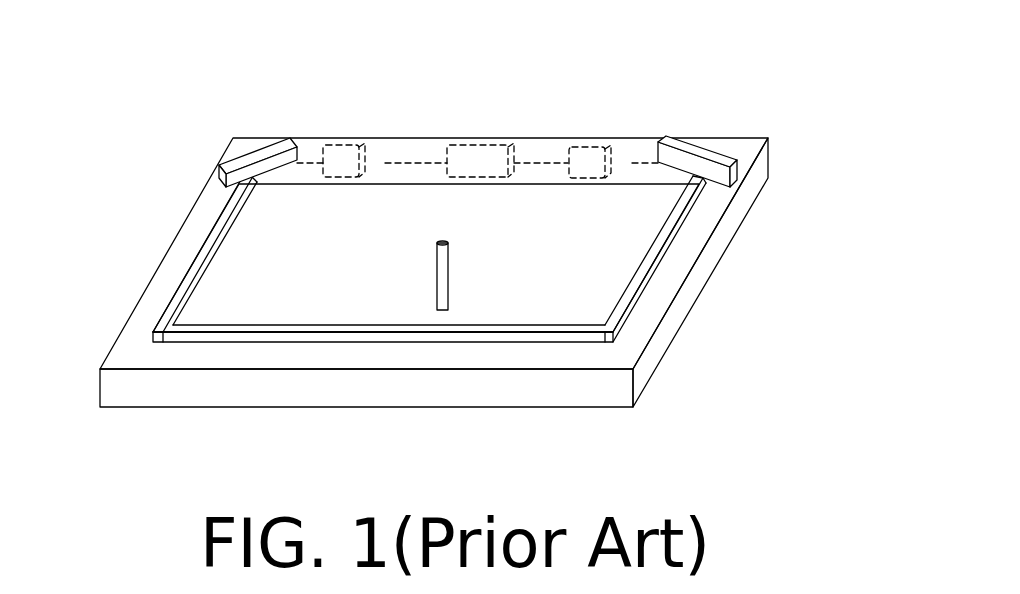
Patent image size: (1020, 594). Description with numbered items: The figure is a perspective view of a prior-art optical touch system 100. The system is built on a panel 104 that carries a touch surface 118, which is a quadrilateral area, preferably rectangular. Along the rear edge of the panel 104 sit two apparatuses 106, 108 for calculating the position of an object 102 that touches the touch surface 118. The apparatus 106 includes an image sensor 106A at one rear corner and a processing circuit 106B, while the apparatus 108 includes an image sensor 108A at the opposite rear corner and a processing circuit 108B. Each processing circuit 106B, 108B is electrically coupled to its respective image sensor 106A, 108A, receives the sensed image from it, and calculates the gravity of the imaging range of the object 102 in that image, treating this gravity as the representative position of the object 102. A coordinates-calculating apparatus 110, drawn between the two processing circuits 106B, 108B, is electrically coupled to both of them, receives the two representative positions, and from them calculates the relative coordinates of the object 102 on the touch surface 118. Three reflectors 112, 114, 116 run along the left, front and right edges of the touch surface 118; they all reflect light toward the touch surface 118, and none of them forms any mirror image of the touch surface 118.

The optical touch system 100 is at (752, 465).
The object 102 is at (448, 275).
The panel 104 is at (670, 275).
The apparatus for calculating the position of an object 106 is at (390, 64).
The image sensor 106A is at (248, 148).
The processing circuit 106B is at (350, 162).
The apparatus for calculating the position of an object 108 is at (758, 45).
The image sensor 108A is at (697, 148).
The processing circuit 108B is at (597, 157).
The coordinates-calculating apparatus 110 is at (480, 142).
The reflector 112 is at (207, 248).
The reflector 114 is at (310, 330).
The reflector 116 is at (675, 220).
The touch surface 118 is at (555, 308).